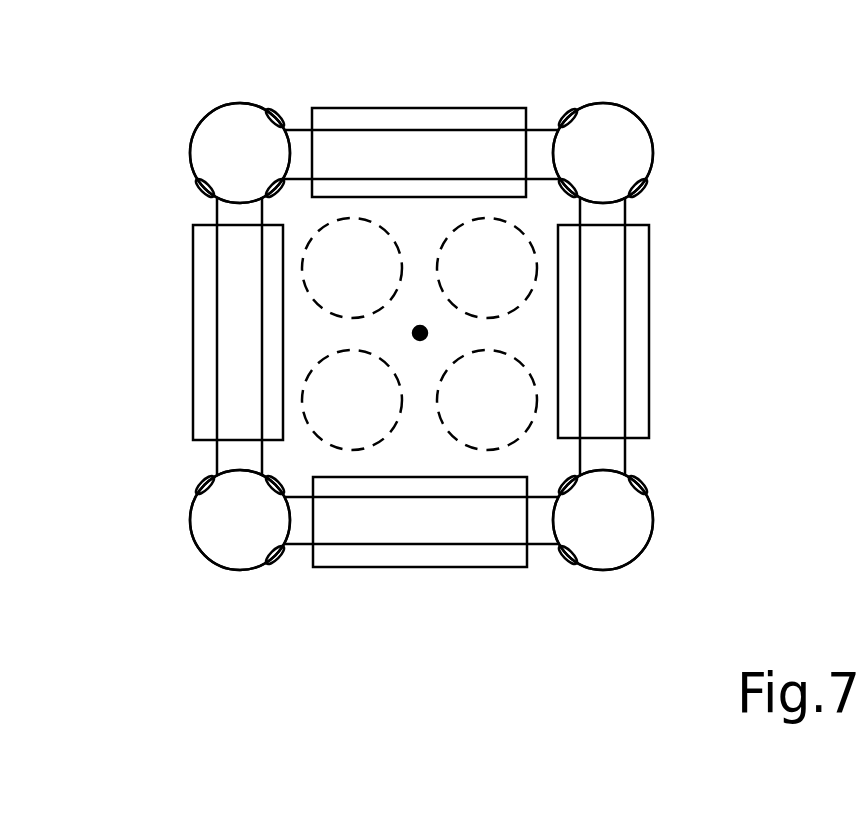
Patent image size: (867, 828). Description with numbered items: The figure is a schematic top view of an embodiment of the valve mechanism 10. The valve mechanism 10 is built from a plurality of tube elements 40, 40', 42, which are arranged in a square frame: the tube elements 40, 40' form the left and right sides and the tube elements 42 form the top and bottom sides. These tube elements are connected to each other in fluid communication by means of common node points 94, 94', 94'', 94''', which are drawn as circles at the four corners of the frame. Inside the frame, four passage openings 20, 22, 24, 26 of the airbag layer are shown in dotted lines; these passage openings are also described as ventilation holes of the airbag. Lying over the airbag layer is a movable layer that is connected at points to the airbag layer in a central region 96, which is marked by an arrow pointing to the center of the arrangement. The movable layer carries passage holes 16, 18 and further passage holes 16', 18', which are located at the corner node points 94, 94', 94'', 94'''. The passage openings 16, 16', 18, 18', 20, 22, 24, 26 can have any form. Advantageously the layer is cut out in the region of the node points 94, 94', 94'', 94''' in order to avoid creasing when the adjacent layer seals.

The valve mechanism 10 is at (701, 717).
The passage hole 16 is at (211, 528).
The passage hole 16' is at (240, 114).
The passage hole 18 is at (644, 520).
The passage hole 18' is at (603, 116).
The passage opening 20 is at (370, 270).
The passage opening 22 is at (508, 268).
The passage opening 24 is at (370, 405).
The passage opening 26 is at (457, 393).
The tube element 40 is at (208, 336).
The tube element 40' is at (637, 325).
The tube element 42 is at (541, 142).
The node point 94 is at (240, 559).
The node point 94' is at (197, 153).
The node point 94'' is at (649, 147).
The node point 94''' is at (628, 547).
The region 96 is at (428, 333).